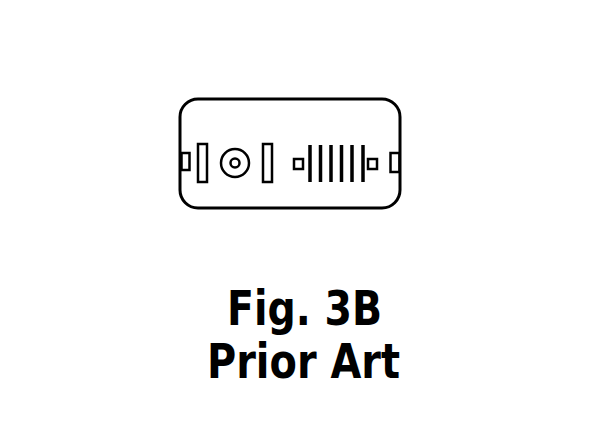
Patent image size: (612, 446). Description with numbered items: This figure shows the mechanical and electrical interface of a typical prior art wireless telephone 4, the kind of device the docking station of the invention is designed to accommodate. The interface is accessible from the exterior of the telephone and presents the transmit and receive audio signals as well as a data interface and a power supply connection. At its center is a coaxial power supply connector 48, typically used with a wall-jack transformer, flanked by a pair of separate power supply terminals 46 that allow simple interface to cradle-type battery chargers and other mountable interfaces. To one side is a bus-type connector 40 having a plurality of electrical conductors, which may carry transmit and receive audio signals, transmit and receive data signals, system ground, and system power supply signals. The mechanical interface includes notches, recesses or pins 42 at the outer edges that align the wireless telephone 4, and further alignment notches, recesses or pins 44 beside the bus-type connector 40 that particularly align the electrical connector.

The wireless telephone 4 is at (180, 112).
The bus-type connector 40 is at (308, 140).
The alignment notches, recesses or pins 42 is at (180, 163).
The alignment notches, recesses or pins 44 is at (373, 170).
The power supply terminals 46 is at (268, 143).
The coaxial power supply connector 48 is at (247, 173).